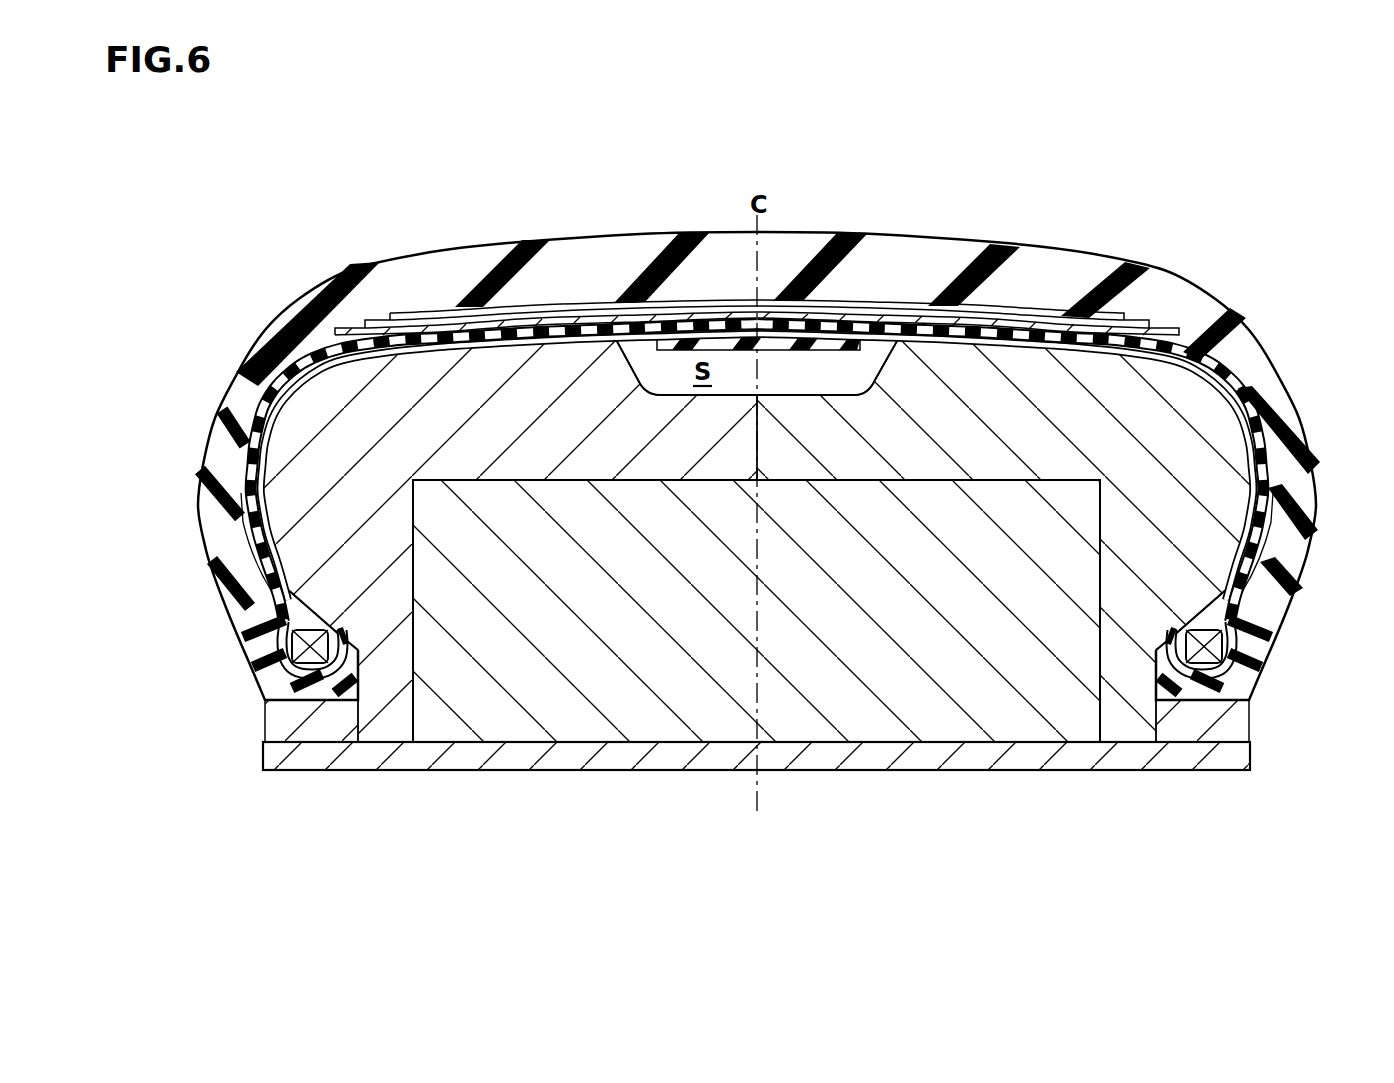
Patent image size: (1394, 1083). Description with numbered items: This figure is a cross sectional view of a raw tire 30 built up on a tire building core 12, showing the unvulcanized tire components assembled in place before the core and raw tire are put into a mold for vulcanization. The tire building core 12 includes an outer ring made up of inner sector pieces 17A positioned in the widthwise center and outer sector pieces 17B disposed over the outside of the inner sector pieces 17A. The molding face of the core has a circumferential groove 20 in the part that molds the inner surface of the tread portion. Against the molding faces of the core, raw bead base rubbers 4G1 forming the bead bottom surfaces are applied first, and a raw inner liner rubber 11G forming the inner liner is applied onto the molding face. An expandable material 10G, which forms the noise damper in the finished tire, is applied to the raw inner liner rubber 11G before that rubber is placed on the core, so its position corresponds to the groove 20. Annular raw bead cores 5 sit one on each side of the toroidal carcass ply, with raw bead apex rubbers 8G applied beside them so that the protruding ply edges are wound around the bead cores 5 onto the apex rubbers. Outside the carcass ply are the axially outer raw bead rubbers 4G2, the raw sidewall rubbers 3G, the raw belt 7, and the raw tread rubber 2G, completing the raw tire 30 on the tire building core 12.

The raw tire 30 is at (1182, 226).
The raw tread rubber 2G is at (1040, 262).
The raw sidewall rubbers 3G is at (225, 455).
The raw bead base rubbers 4G1 is at (322, 700).
The axially outer raw bead rubbers 4G2 is at (262, 612).
The raw bead cores 5 is at (300, 650).
The raw belt 7 is at (428, 306).
The raw bead apex rubbers 8G is at (268, 553).
The expandable material 10G is at (830, 347).
The raw inner liner rubber 11G is at (300, 432).
The tire building core 12 is at (912, 777).
The inner sector pieces 17A is at (620, 692).
The outer sector pieces 17B is at (285, 440).
The circumferential groove 20 is at (645, 355).